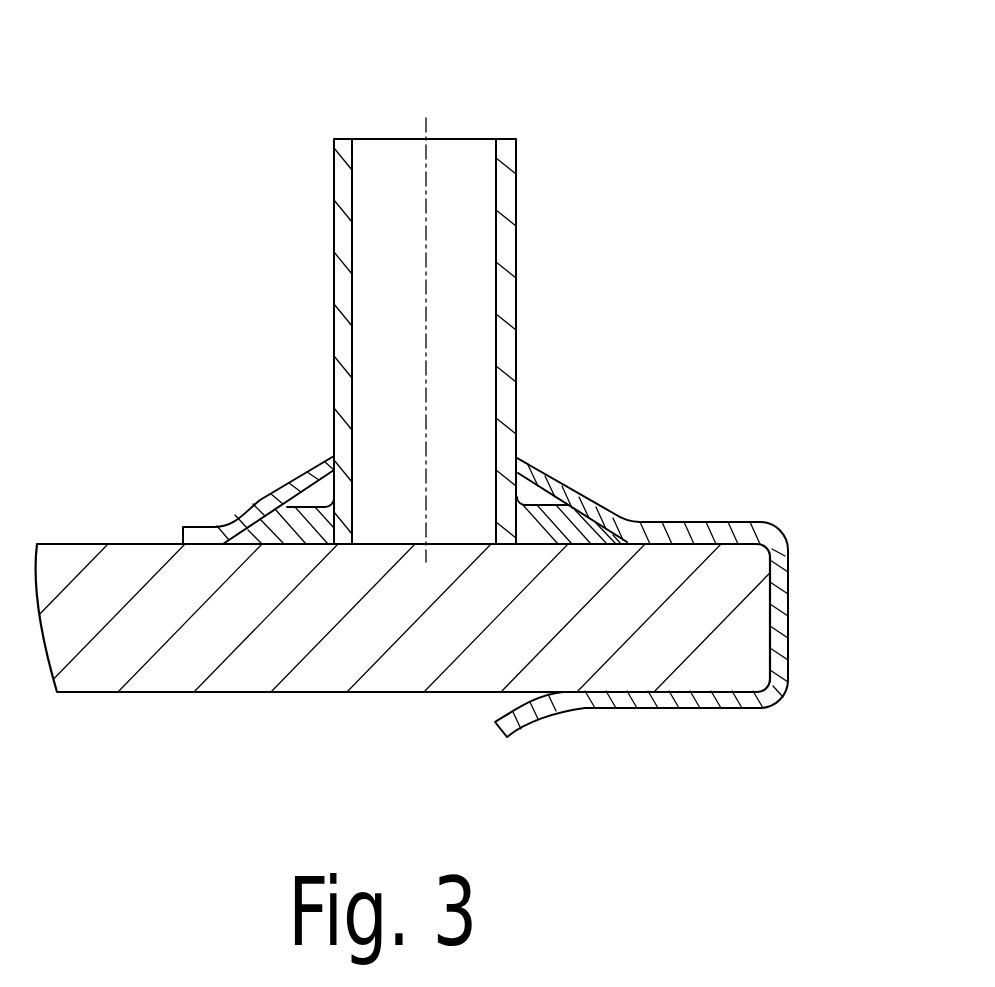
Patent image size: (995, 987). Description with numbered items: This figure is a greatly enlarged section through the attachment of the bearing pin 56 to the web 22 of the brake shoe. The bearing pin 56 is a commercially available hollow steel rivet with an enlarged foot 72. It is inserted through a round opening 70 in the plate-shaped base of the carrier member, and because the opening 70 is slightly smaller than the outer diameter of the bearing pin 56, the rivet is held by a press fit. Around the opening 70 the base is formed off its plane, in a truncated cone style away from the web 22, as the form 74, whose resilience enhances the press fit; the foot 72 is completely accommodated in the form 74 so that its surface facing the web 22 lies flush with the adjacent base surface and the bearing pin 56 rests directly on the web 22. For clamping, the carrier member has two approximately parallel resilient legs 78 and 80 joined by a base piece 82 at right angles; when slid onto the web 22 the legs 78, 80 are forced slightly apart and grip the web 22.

The web 22 is at (152, 627).
The bearing pin 56 is at (508, 249).
The round opening 70 is at (530, 435).
The enlarged foot 72 is at (310, 522).
The truncated cone-shaped form 74 is at (292, 481).
The leg 78 is at (688, 528).
The leg 80 is at (666, 702).
The base piece 82 is at (780, 632).